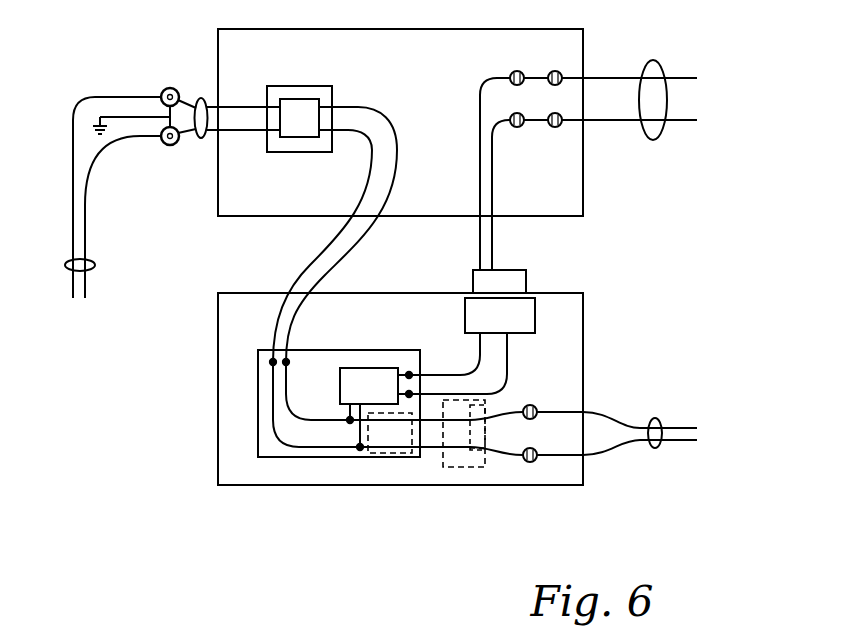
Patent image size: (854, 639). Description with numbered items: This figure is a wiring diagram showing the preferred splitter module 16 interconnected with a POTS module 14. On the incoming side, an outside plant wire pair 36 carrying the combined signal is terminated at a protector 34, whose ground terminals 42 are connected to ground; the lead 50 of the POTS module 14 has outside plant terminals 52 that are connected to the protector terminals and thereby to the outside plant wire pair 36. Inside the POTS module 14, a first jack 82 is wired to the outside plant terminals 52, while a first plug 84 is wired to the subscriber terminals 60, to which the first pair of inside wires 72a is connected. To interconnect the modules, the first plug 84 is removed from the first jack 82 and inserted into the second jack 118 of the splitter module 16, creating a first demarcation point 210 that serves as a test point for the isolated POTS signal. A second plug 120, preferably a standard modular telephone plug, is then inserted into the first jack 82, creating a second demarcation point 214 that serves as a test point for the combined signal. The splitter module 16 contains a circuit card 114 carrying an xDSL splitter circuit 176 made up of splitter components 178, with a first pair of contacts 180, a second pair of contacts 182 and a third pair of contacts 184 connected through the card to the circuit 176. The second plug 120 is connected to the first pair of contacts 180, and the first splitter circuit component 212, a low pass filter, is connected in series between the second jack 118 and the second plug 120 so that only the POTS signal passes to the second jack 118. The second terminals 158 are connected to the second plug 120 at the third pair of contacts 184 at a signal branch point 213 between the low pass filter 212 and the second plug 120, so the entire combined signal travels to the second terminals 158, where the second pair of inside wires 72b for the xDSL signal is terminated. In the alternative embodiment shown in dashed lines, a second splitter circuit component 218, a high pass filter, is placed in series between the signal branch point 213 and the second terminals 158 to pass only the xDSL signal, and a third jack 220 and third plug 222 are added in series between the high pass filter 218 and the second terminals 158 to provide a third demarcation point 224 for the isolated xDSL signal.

The POTS module 14 is at (587, 37).
The splitter module 16 is at (583, 320).
The protector 34 is at (107, 114).
The outside plant wire pair 36 is at (95, 266).
The ground terminal 42 is at (164, 89).
The lead 50 is at (203, 140).
The outside plant terminal 52 is at (178, 90).
The subscriber terminals 60 is at (557, 128).
The first pair of inside wires 72a is at (665, 131).
The second pair of inside wires 72b is at (656, 418).
The first jack 82 is at (305, 86).
The first plug 84 is at (521, 270).
The circuit card 114 is at (273, 458).
The second jack 118 is at (536, 311).
The second plug 120 is at (292, 134).
The second terminals 158 is at (535, 460).
The xDSL splitter circuit 176 is at (268, 430).
The splitter components 178 is at (372, 368).
The first pair of contacts 180 is at (285, 364).
The second pair of contacts 182 is at (411, 392).
The third pair of contacts 184 is at (350, 424).
The signal branch point 213 is at (360, 450).
The first demarcation point 210 is at (530, 296).
The first splitter circuit component 212 is at (350, 368).
The second demarcation point 214 is at (316, 104).
The second splitter circuit component 218 is at (383, 455).
The third jack 220 is at (452, 470).
The third plug 222 is at (482, 460).
The third demarcation point 224 is at (470, 456).